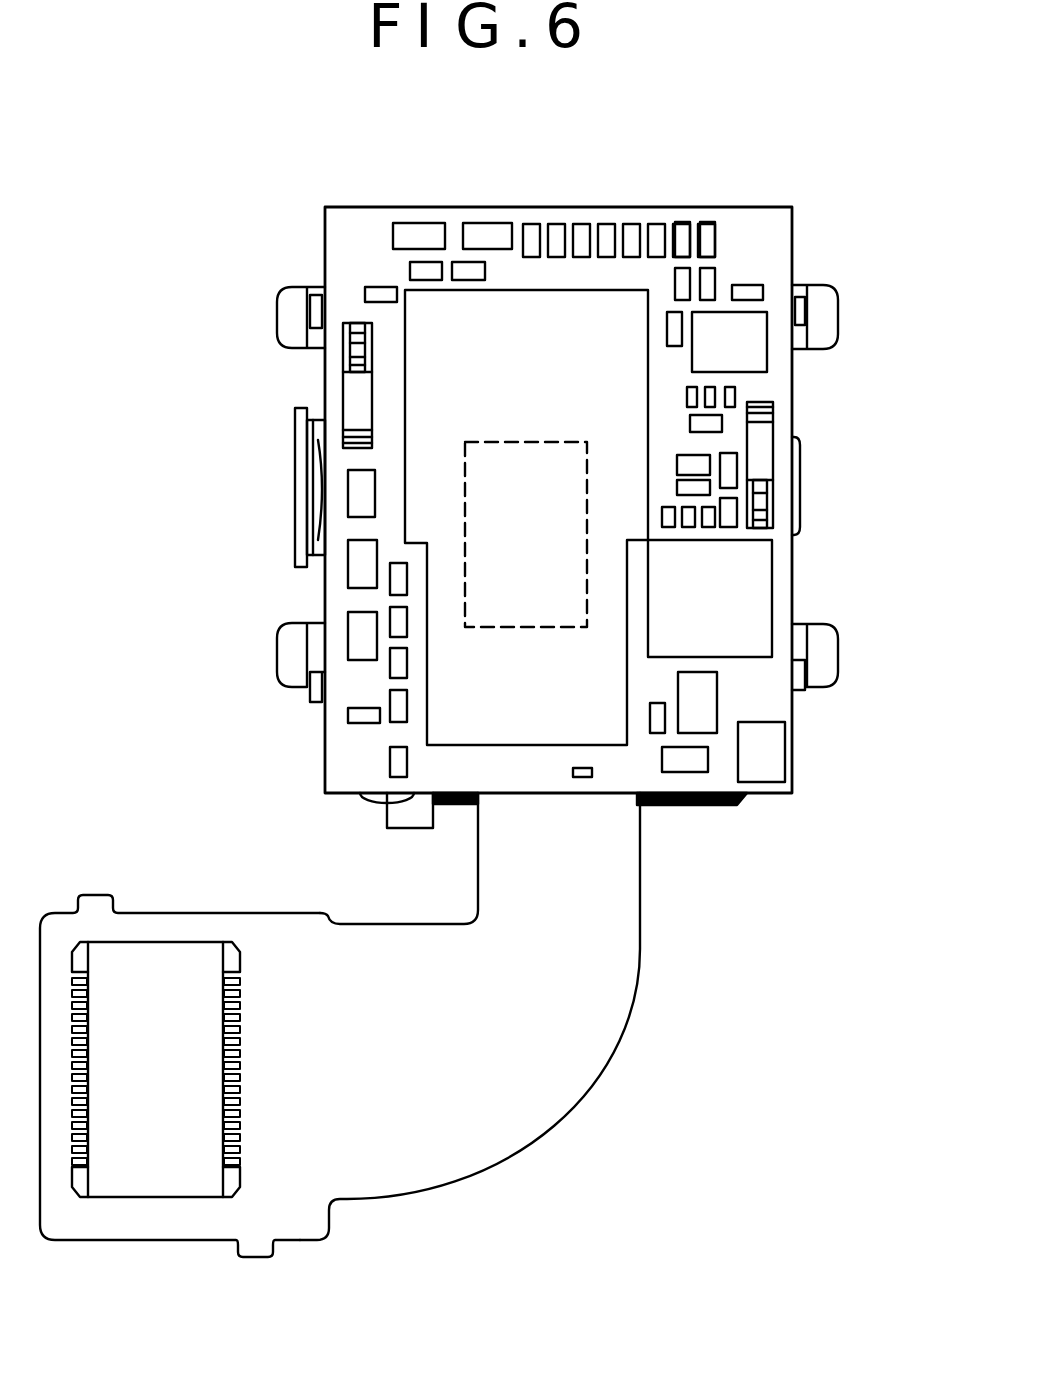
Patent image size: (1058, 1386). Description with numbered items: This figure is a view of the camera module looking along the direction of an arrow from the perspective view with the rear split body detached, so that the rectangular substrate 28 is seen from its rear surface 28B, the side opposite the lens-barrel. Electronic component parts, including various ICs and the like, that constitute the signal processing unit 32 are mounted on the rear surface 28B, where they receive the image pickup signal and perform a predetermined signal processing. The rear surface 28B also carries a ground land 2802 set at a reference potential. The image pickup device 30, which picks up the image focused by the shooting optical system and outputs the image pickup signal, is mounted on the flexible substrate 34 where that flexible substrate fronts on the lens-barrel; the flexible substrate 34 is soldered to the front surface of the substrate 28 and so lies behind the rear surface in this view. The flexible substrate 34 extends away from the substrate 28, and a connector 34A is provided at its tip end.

The substrate 28 is at (598, 467).
The rear surface 28B is at (743, 239).
The image pickup device 30 is at (507, 442).
The signal processing unit 32 is at (656, 220).
The ground land 2802 is at (770, 759).
The flexible substrate 34 is at (525, 1104).
The connector 34A is at (155, 1165).